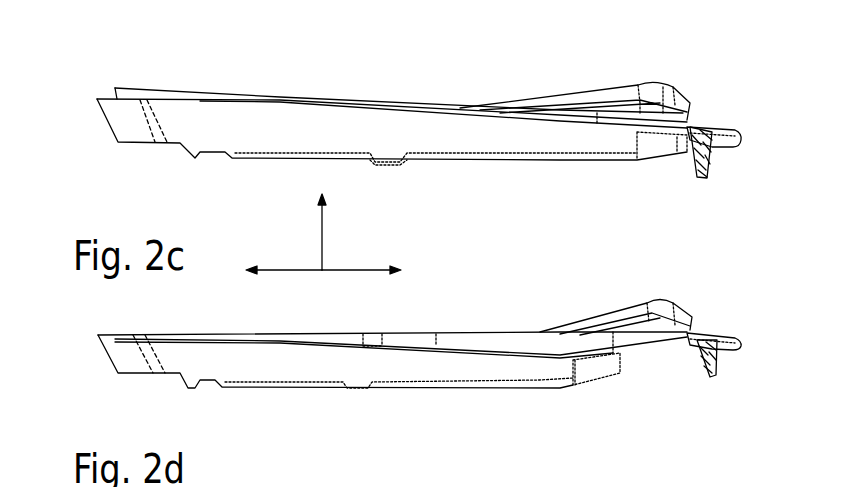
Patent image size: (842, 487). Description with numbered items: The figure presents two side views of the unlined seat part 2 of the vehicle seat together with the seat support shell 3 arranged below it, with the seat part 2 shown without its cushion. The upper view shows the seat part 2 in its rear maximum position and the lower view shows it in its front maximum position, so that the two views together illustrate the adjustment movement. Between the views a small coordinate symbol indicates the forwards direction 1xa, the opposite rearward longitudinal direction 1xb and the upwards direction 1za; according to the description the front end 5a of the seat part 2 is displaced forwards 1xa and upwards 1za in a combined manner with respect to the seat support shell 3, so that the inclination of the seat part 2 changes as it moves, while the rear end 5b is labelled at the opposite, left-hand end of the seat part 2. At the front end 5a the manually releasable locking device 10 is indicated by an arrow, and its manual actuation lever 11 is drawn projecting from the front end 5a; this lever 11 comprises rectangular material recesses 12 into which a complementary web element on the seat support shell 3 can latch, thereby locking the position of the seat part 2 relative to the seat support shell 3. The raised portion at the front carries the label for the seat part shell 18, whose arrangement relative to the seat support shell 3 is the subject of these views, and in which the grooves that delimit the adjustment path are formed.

In FIG. 2C, the seat support shell 3 is at (120, 119).
In FIG. 2D, the seat support shell 3 is at (120, 349).
In FIG. 2C, the front end 5a is at (745, 115).
In FIG. 2D, the front end 5a is at (737, 295).
In FIG. 2C, the rear end 5b is at (80, 102).
In FIG. 2D, the rear end 5b is at (82, 337).
In FIG. 2C, the locking device 10 is at (712, 203).
In FIG. 2D, the locking device 10 is at (714, 408).
In FIG. 2C, the manual actuation lever 11 is at (739, 141).
In FIG. 2D, the manual actuation lever 11 is at (742, 346).
In FIG. 2C, the material recesses 12 is at (787, 6).
In FIG. 2C, the seat part shell 18 is at (648, 86).
In FIG. 2D, the seat part shell 18 is at (657, 302).
In FIG. 2C, the seat part 2 is at (593, 47).
In FIG. 2D, the seat part 2 is at (606, 276).
In FIG. 2C, the upwards direction 1za is at (320, 212).
In FIG. 2C, the rearward longitudinal direction 1xb is at (263, 269).
In FIG. 2C, the forwards direction 1xa is at (376, 269).